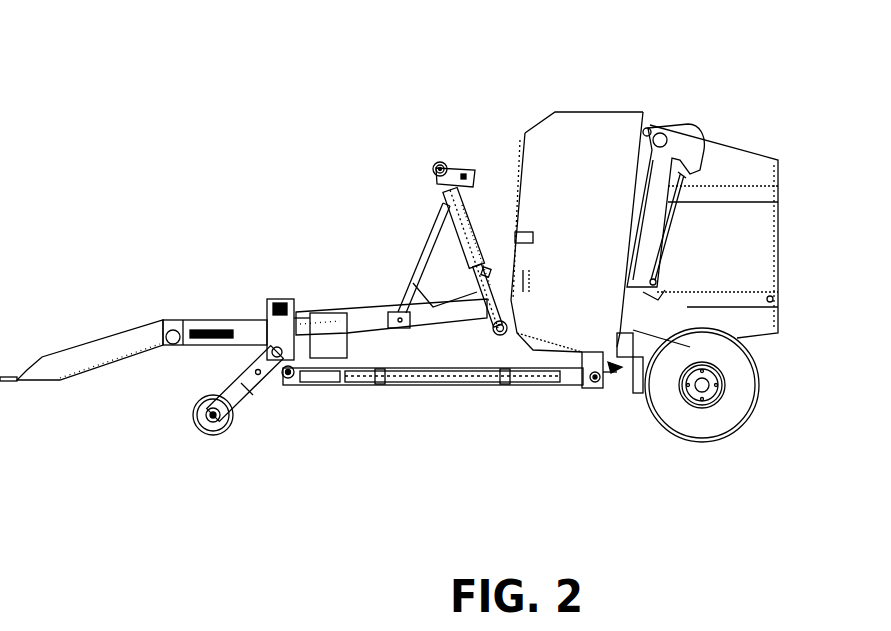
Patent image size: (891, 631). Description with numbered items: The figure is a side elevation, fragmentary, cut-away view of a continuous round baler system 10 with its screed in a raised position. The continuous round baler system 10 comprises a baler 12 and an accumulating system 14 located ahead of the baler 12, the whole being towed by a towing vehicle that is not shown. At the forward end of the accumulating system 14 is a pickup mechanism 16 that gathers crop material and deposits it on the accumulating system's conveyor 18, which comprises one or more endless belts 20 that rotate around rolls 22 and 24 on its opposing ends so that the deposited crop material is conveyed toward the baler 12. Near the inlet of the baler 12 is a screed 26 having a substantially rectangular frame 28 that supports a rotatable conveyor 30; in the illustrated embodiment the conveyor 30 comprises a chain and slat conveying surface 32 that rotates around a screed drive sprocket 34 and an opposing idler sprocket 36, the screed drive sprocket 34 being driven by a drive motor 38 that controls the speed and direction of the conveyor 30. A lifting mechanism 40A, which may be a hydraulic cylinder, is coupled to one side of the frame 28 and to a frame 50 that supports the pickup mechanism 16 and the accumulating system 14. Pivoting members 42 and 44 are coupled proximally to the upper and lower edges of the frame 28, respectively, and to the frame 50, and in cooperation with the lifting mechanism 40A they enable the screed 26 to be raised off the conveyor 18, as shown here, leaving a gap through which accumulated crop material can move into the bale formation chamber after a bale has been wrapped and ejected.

The continuous round baler system 10 is at (153, 90).
The baler 12 is at (778, 215).
The accumulating system 14 is at (293, 267).
The pickup mechanism 16 is at (257, 402).
The conveyor 18 is at (481, 413).
The endless belts 20 is at (462, 366).
The roll 22 is at (289, 378).
The roll 24 is at (597, 385).
The screed 26 is at (432, 127).
The frame 28 is at (458, 195).
The conveyor 30 is at (485, 238).
The chain and slat conveying surface 32 is at (470, 275).
The screed drive sprocket 34 is at (432, 163).
The idler sprocket 36 is at (502, 334).
The drive motor 38 is at (467, 168).
The lifting mechanism 40A is at (487, 273).
The pivoting member 42 is at (438, 220).
The pivoting member 44 is at (453, 297).
The frame 50 is at (220, 317).